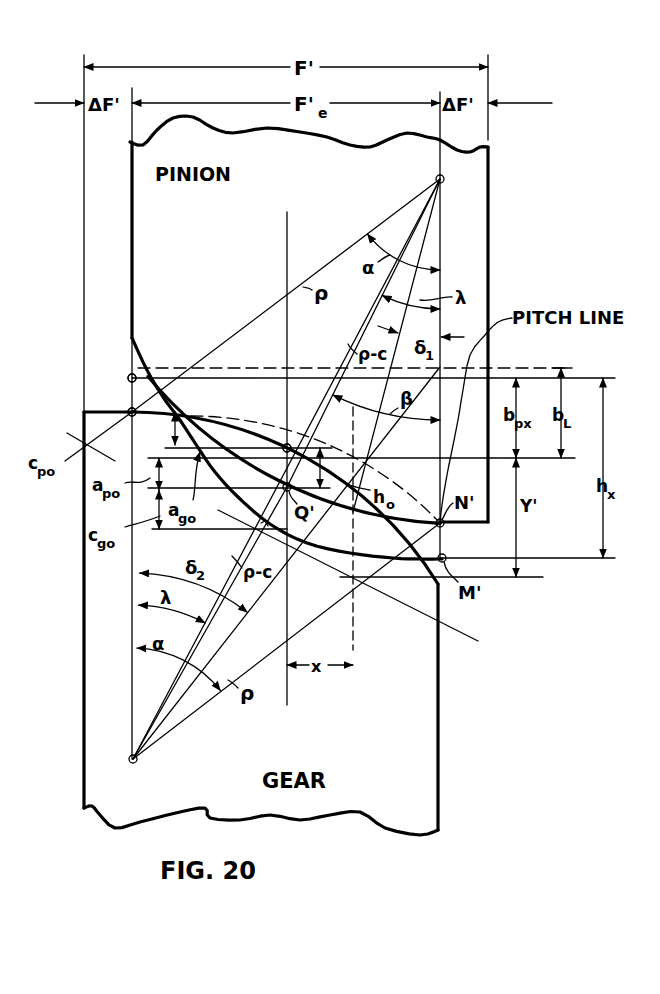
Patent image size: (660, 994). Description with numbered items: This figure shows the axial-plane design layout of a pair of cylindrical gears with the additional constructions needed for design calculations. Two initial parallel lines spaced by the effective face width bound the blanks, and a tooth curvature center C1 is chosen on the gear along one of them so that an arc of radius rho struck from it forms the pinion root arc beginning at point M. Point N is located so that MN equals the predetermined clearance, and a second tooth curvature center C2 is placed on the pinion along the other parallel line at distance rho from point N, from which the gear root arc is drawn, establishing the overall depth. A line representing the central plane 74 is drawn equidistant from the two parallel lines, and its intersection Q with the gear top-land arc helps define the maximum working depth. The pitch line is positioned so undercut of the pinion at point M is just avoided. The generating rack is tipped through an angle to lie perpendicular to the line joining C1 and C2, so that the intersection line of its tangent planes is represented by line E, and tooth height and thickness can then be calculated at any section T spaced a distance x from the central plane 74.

The central plane 74 is at (287, 235).
The tooth curvature center C1 is at (135, 763).
The tooth curvature center C2 is at (454, 170).
The point M is at (128, 378).
The point N is at (130, 416).
The intersection point Q is at (284, 446).
The section T is at (353, 628).
The line E is at (478, 641).